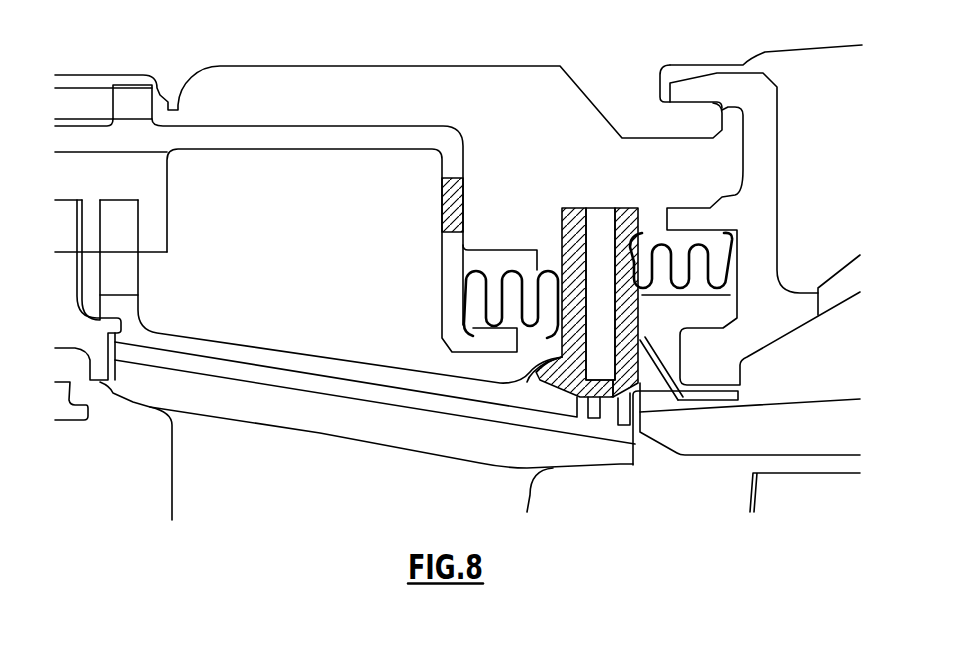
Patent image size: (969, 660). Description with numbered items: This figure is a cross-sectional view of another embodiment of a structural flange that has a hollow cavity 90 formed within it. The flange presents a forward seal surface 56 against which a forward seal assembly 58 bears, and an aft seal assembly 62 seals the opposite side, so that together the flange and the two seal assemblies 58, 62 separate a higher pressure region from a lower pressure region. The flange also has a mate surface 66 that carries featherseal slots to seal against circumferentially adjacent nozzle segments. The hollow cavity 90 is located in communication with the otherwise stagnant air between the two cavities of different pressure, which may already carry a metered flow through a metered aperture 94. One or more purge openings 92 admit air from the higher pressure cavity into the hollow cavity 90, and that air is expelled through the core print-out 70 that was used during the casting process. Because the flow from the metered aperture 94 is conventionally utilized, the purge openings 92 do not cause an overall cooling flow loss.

The forward seal surface 56 is at (562, 232).
The forward seal assembly 58 is at (524, 303).
The aft seal assembly 62 is at (728, 258).
The mate surface 66 is at (637, 224).
The core print-out 70 is at (598, 212).
The hollow cavity 90 is at (613, 207).
The purge openings 92 is at (531, 375).
The metered aperture 94 is at (447, 212).